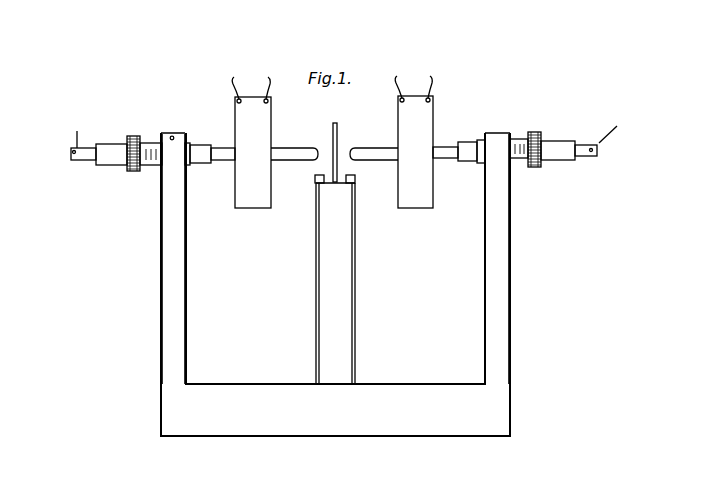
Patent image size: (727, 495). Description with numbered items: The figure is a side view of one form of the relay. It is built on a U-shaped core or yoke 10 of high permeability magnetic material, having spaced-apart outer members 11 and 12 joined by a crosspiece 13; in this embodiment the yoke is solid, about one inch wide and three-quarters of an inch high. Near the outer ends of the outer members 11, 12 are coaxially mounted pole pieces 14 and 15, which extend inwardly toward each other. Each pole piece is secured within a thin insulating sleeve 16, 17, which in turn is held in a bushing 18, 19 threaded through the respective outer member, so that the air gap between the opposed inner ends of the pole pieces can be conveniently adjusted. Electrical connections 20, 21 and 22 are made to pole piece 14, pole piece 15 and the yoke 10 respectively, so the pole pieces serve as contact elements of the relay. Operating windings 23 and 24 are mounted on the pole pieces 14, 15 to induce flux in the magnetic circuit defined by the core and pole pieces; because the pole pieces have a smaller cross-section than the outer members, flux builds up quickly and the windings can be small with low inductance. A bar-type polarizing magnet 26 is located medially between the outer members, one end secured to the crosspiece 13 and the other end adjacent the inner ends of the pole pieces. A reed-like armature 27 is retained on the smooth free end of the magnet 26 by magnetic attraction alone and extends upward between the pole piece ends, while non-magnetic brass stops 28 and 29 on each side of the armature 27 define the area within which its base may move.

The core or yoke 10 is at (401, 361).
The outer member 11 is at (172, 310).
The outer member 12 is at (500, 300).
The crosspiece 13 is at (367, 428).
The pole piece 14 is at (291, 150).
The pole piece 15 is at (366, 150).
The insulating sleeve 16 is at (118, 155).
The insulating sleeve 17 is at (562, 151).
The bushing 18 is at (148, 167).
The bushing 19 is at (517, 160).
The electrical connection 20 is at (75, 138).
The electrical connection 21 is at (600, 143).
The electrical connection 22 is at (172, 136).
The operating winding 23 is at (252, 204).
The operating winding 24 is at (428, 210).
The polarizing magnet 26 is at (350, 288).
The armature 27 is at (337, 140).
The stop 28 is at (313, 180).
The stop 29 is at (357, 178).